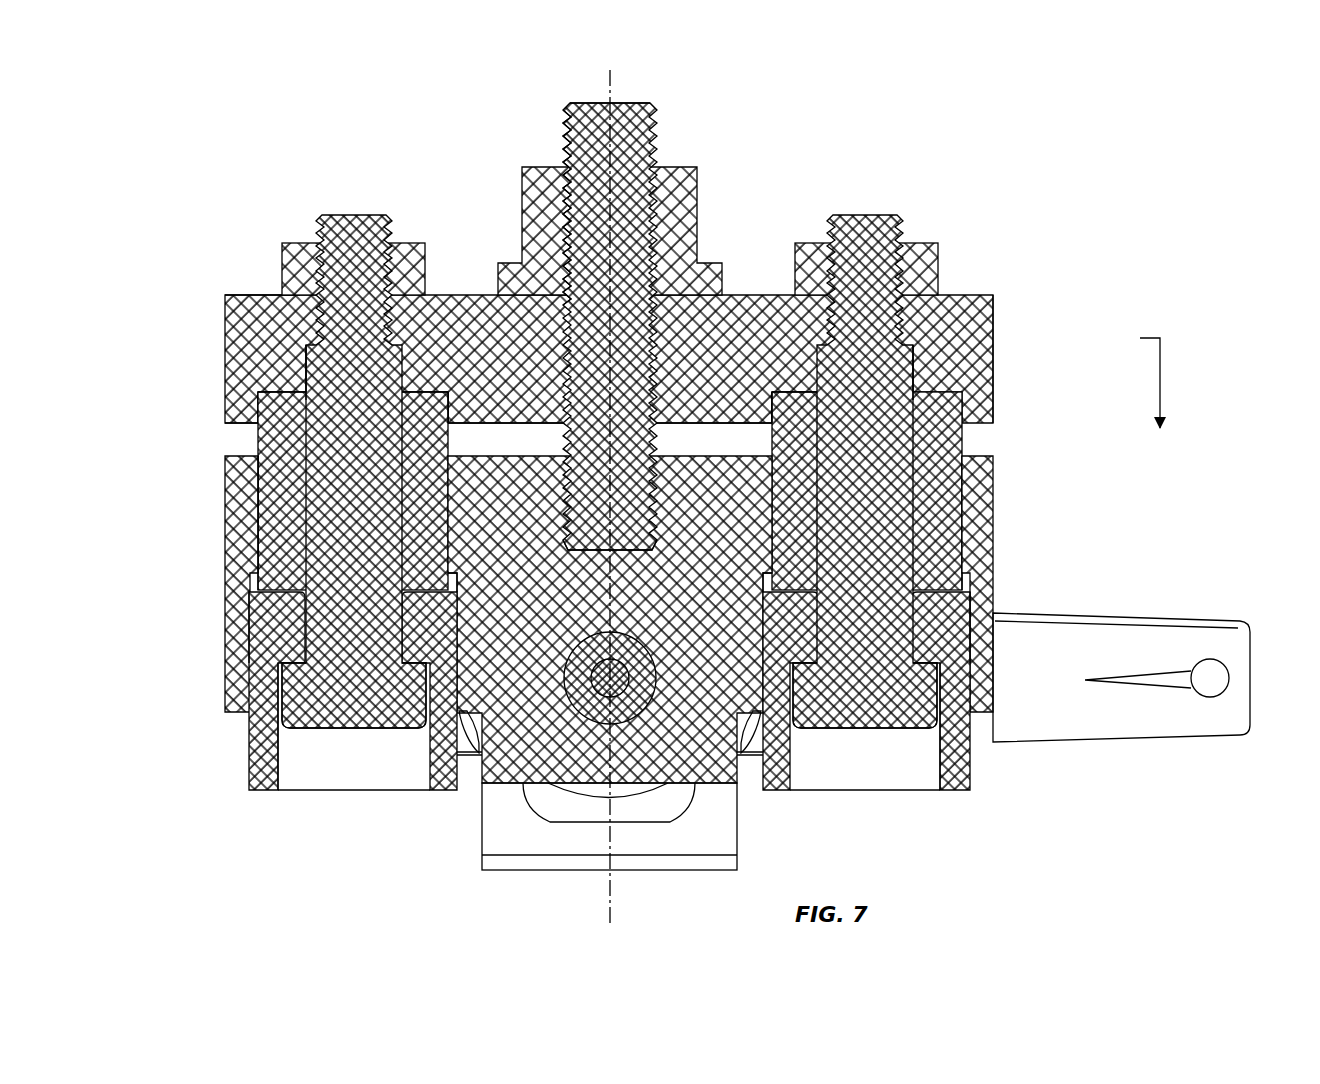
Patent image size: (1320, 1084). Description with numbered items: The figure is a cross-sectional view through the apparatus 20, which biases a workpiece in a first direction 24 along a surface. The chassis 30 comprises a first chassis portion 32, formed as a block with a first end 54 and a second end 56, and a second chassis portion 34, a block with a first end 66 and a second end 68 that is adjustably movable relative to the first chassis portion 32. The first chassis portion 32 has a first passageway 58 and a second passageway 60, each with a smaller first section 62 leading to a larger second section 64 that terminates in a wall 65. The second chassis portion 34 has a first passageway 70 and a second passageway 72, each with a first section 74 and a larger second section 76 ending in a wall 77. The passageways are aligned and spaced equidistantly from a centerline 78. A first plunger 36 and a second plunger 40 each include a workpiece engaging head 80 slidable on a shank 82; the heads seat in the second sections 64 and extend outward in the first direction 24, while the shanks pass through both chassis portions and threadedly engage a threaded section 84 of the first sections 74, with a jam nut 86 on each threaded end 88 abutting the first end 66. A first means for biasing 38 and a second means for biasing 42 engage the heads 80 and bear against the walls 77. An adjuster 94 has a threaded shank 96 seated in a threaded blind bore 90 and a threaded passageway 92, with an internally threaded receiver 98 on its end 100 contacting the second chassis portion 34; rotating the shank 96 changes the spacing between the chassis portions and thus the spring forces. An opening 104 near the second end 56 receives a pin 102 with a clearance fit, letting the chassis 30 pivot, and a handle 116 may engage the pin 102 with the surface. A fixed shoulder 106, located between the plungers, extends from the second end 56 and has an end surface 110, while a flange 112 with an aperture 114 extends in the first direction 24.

The apparatus 20 is at (985, 172).
The first direction 24 is at (1136, 383).
The chassis 30 is at (213, 383).
The first chassis portion 32 is at (624, 619).
The second chassis portion 34 is at (998, 365).
The first plunger 36 is at (970, 790).
The first means for biasing 38 is at (945, 440).
The second plunger 40 is at (250, 790).
The second means for biasing 42 is at (283, 485).
The first end 54 is at (258, 455).
The second end 56 is at (240, 718).
The first passageway 58 is at (965, 560).
The second passageway 60 is at (255, 560).
The first section 62 is at (280, 530).
The second section 64 is at (262, 650).
The wall 65 is at (455, 580).
The first end 66 is at (232, 300).
The second end 68 is at (235, 440).
The first passageway 70 is at (922, 375).
The second passageway 72 is at (303, 375).
The first section 74 is at (420, 370).
The second section 76 is at (448, 402).
The wall 77 is at (440, 395).
The centerline 78 is at (612, 880).
The workpiece engaging head 80 is at (278, 758).
The shank 82 is at (362, 705).
The threaded section 84 is at (315, 320).
The jam nut 86 is at (412, 260).
The threaded end 88 is at (345, 235).
The threaded blind bore 90 is at (655, 508).
The threaded passageway 92 is at (660, 360).
The adjuster 94 is at (630, 178).
The shank 96 is at (580, 150).
The receiver 98 is at (685, 200).
The end 100 is at (636, 118).
The pin 102 is at (565, 698).
The opening 104 is at (640, 700).
The fixed shoulder 106 is at (740, 780).
The end surface 110 is at (535, 805).
The flange 112 is at (553, 845).
The aperture 114 is at (651, 808).
The handle 116 is at (1112, 718).